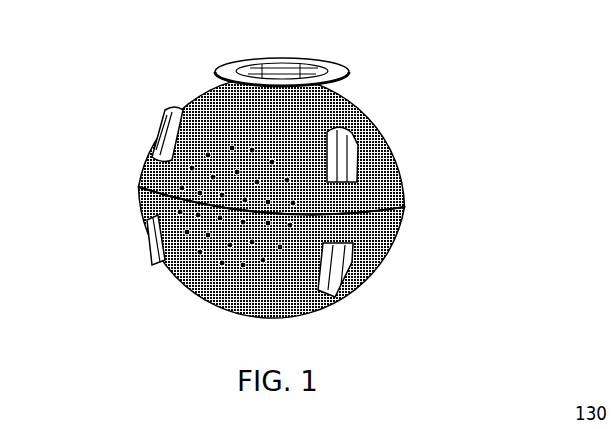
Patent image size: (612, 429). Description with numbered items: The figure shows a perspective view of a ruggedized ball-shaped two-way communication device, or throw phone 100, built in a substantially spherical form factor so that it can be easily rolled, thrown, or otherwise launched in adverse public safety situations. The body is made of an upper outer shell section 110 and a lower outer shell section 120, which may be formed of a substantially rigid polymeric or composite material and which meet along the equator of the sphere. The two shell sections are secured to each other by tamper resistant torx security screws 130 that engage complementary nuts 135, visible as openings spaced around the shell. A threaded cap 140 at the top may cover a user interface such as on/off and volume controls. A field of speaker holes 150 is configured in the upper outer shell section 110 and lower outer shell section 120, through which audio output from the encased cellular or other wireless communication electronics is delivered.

The throw phone 100 is at (295, 197).
The upper outer shell section 110 is at (380, 192).
The lower outer shell section 120 is at (230, 293).
The tamper resistant torx security screws 130 is at (160, 155).
The complementary nuts 135 is at (155, 228).
The threaded cap 140 is at (288, 59).
The speaker holes 150 is at (242, 230).